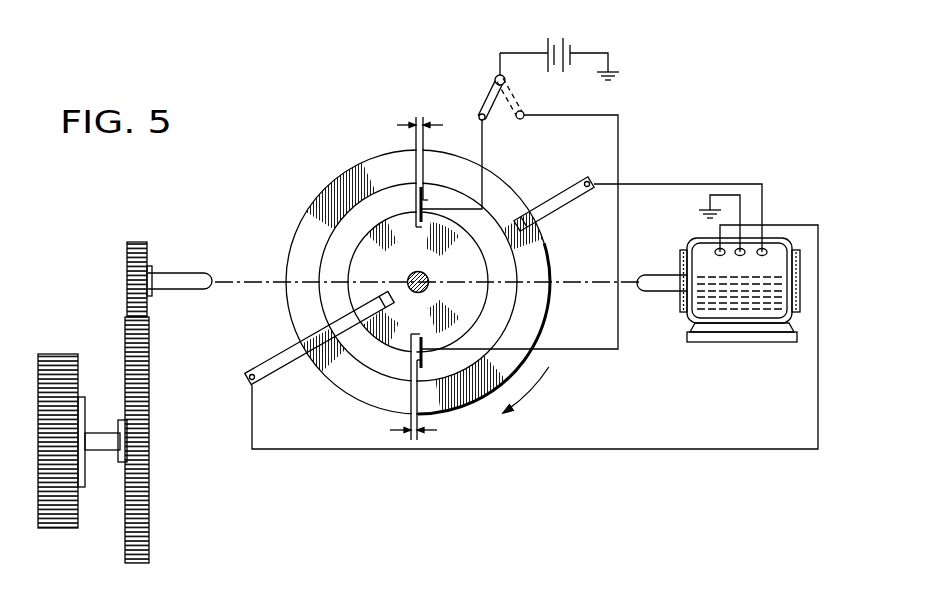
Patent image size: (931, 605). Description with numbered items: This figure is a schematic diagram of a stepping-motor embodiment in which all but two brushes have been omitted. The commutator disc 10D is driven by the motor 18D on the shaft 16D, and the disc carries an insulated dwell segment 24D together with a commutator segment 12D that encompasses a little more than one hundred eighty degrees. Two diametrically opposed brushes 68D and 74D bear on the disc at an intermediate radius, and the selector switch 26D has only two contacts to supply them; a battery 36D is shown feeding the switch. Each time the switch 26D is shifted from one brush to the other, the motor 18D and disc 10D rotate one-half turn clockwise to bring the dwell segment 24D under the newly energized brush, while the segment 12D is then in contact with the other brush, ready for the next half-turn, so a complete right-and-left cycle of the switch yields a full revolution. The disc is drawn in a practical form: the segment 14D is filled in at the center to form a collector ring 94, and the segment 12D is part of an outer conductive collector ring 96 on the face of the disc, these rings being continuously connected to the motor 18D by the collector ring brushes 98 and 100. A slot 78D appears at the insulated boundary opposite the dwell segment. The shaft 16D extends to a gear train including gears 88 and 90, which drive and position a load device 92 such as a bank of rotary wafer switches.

The commutator disc 10D is at (375, 198).
The commutator segment 12D is at (503, 247).
The segment 14D is at (365, 267).
The shaft 16D is at (187, 293).
The motor 18D is at (738, 311).
The dwell segment 24D is at (421, 117).
The selector switch 26D is at (492, 92).
The battery 36D is at (573, 43).
The brush 68D is at (427, 198).
The brush 74D is at (422, 363).
The slot 78D is at (412, 437).
The gear 88 is at (130, 278).
The gear 90 is at (128, 515).
The load device 92 is at (68, 338).
The collector ring 94 is at (460, 267).
The outer conductive collector ring 96 is at (327, 205).
The collector ring brush 98 is at (563, 196).
The collector ring brush 100 is at (281, 370).